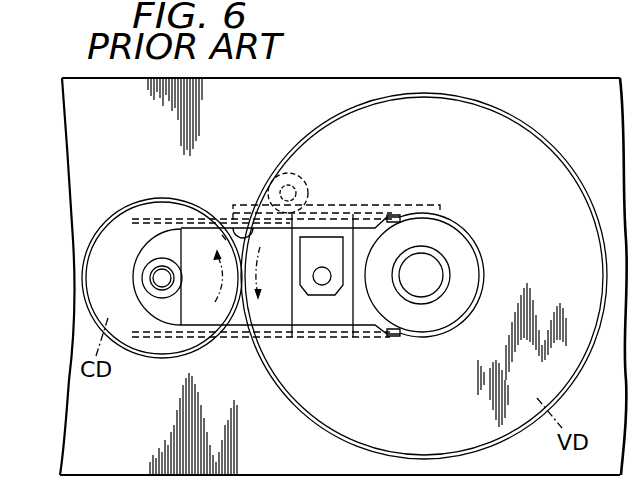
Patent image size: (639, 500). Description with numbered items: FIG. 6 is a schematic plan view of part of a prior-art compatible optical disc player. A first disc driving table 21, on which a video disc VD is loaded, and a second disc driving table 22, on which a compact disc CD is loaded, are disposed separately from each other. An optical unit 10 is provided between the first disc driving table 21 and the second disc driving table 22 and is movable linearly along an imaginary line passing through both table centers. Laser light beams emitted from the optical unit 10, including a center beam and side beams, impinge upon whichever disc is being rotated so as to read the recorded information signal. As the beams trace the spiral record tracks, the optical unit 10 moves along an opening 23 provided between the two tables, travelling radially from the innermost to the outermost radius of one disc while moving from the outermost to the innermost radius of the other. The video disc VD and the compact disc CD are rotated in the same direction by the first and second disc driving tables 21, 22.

The optical unit 10 is at (357, 313).
The first disc driving table 21 is at (466, 255).
The second disc driving table 22 is at (145, 268).
The opening 23 is at (238, 232).